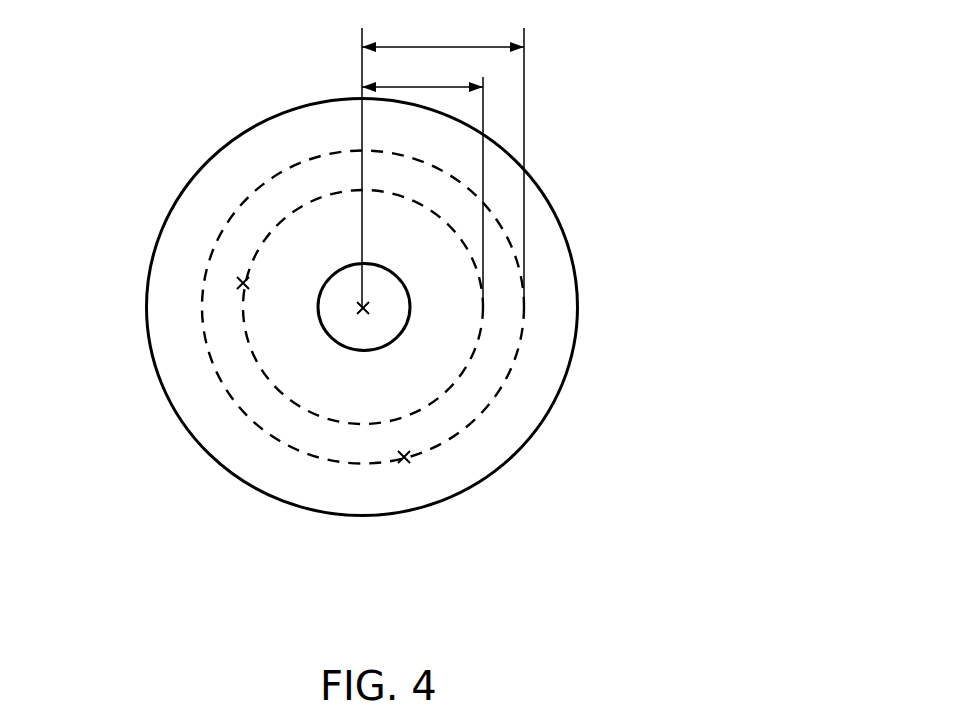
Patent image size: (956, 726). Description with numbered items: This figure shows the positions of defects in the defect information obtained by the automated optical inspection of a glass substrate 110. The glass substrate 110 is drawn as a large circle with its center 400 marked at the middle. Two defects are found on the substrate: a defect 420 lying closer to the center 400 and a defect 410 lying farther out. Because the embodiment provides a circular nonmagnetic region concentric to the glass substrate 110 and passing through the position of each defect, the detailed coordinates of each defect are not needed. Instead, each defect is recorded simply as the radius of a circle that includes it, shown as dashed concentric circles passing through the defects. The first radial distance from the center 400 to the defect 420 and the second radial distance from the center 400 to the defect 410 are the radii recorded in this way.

The glass substrate 110 is at (609, 346).
The center 400 is at (363, 308).
The defect 410 is at (410, 458).
The defect 420 is at (243, 283).